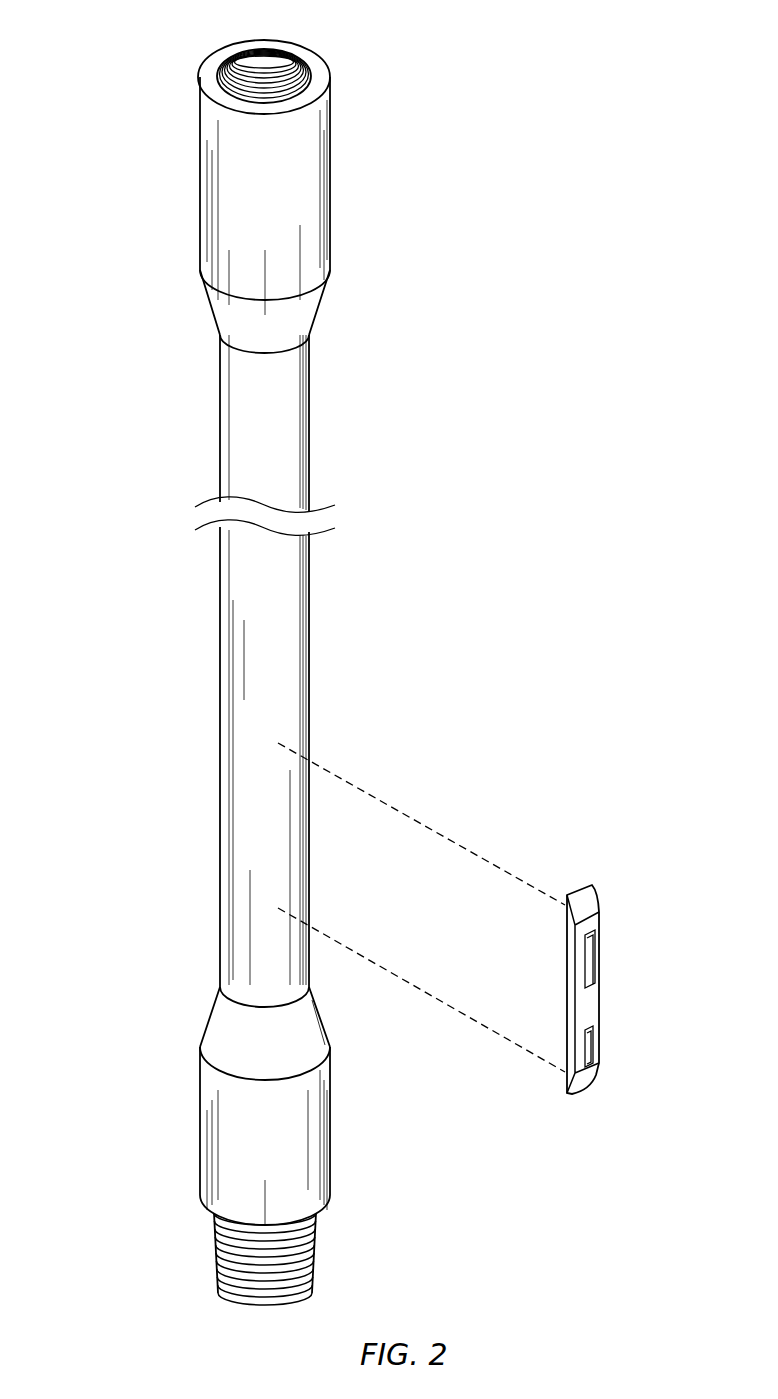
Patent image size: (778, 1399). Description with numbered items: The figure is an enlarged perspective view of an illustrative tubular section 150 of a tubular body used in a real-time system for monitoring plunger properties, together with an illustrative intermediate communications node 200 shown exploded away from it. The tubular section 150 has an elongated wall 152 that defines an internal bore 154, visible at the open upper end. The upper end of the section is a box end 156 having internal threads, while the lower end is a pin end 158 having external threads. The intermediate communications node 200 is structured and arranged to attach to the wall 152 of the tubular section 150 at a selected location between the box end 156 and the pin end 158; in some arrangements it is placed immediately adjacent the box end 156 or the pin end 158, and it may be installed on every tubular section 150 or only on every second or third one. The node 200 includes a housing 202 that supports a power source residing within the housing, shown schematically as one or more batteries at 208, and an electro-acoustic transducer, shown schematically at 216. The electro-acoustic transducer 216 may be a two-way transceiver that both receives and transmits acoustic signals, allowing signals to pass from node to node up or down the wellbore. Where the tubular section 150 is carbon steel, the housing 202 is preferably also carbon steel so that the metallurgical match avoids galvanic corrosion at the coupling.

The tubular section 150 is at (133, 66).
The elongated wall 152 is at (243, 623).
The internal bore 154 is at (293, 62).
The box end 156 is at (332, 183).
The pin end 158 is at (316, 1237).
The intermediate communications node 200 is at (679, 111).
The housing 202 is at (596, 1007).
The power source 208 is at (592, 960).
The electro-acoustic transducer 216 is at (597, 1050).